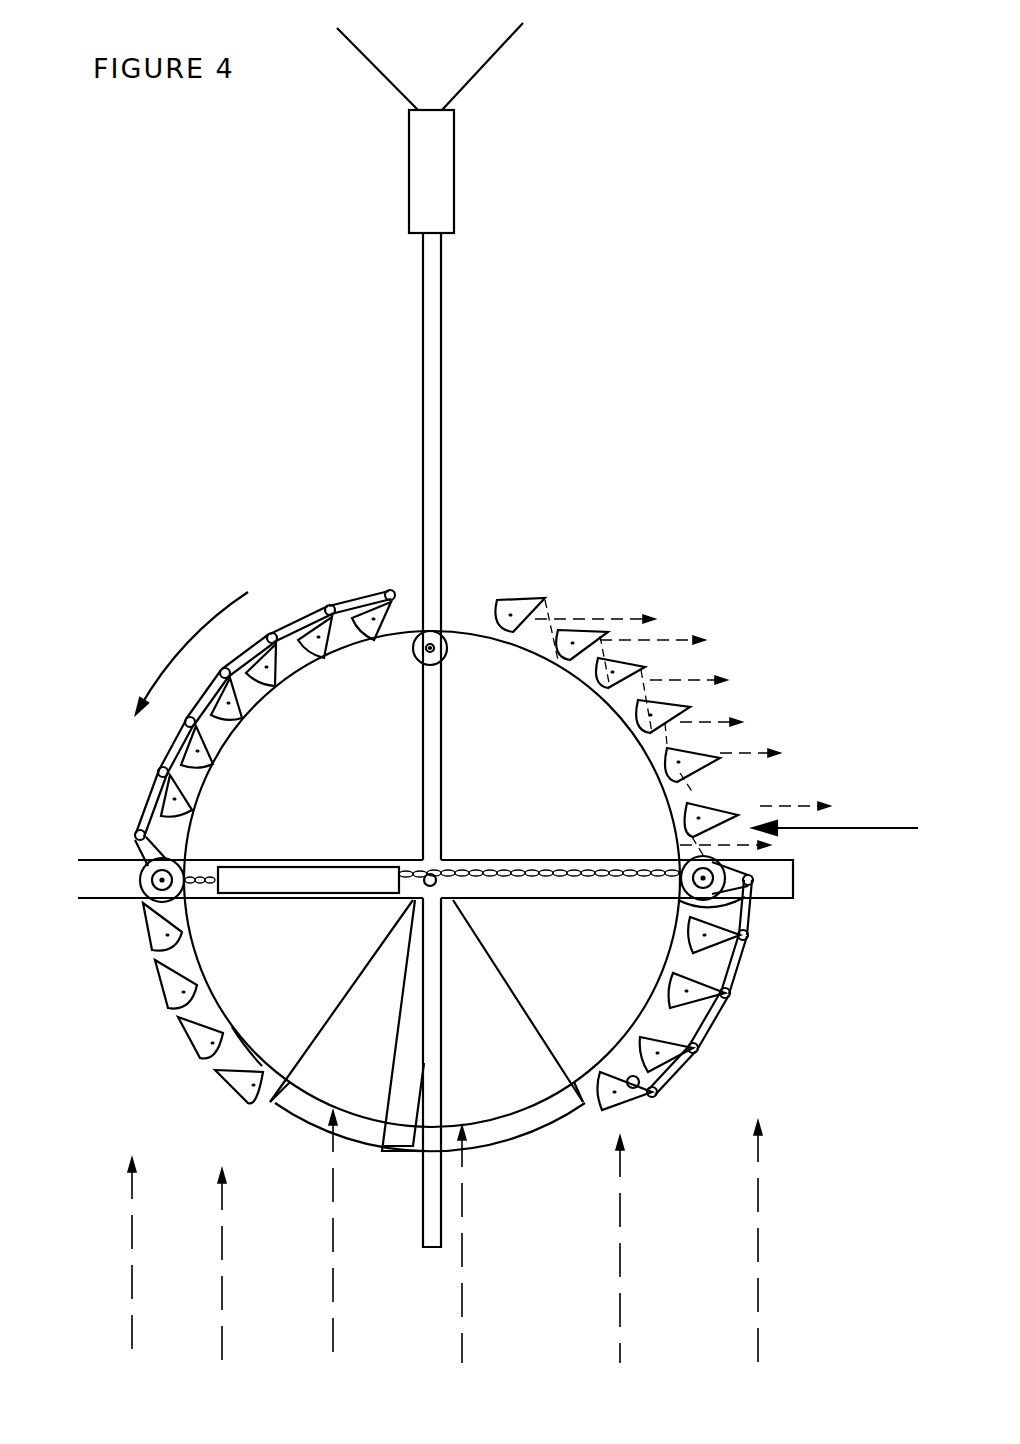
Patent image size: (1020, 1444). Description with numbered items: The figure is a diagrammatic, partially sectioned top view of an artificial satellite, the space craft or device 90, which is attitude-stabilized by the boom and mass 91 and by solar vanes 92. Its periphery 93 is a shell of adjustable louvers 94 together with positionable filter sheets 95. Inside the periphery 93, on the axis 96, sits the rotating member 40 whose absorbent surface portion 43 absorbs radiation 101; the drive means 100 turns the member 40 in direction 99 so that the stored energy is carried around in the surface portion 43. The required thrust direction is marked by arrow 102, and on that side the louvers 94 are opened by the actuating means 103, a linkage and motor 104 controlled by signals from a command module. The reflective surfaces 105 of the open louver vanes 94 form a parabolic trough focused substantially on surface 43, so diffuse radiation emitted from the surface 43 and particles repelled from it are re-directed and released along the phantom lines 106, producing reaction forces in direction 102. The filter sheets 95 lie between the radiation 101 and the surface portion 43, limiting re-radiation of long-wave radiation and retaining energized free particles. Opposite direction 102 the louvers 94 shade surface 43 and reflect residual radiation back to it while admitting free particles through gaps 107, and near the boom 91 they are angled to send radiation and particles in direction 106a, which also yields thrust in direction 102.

The rotating member 40 is at (456, 640).
The absorbent surface portion 43 is at (243, 1040).
The space craft or device 90 is at (428, 480).
The boom and mass 91 is at (437, 290).
The solar vanes 92 is at (483, 67).
The periphery 93 is at (392, 592).
The louvers 94 is at (528, 600).
The filter sheets 95 is at (512, 1132).
The axis 96 is at (436, 874).
The direction of rotation 99 is at (178, 652).
The drive means 100 is at (442, 660).
The radiation 101 is at (333, 1215).
The direction of required thrust 102 is at (853, 829).
The actuating means 103 is at (690, 900).
The motor 104 is at (682, 865).
The reflective surfaces 105 is at (634, 1088).
The phantom lines 106 is at (735, 753).
The direction 106a is at (600, 618).
The gaps 107 is at (170, 1008).